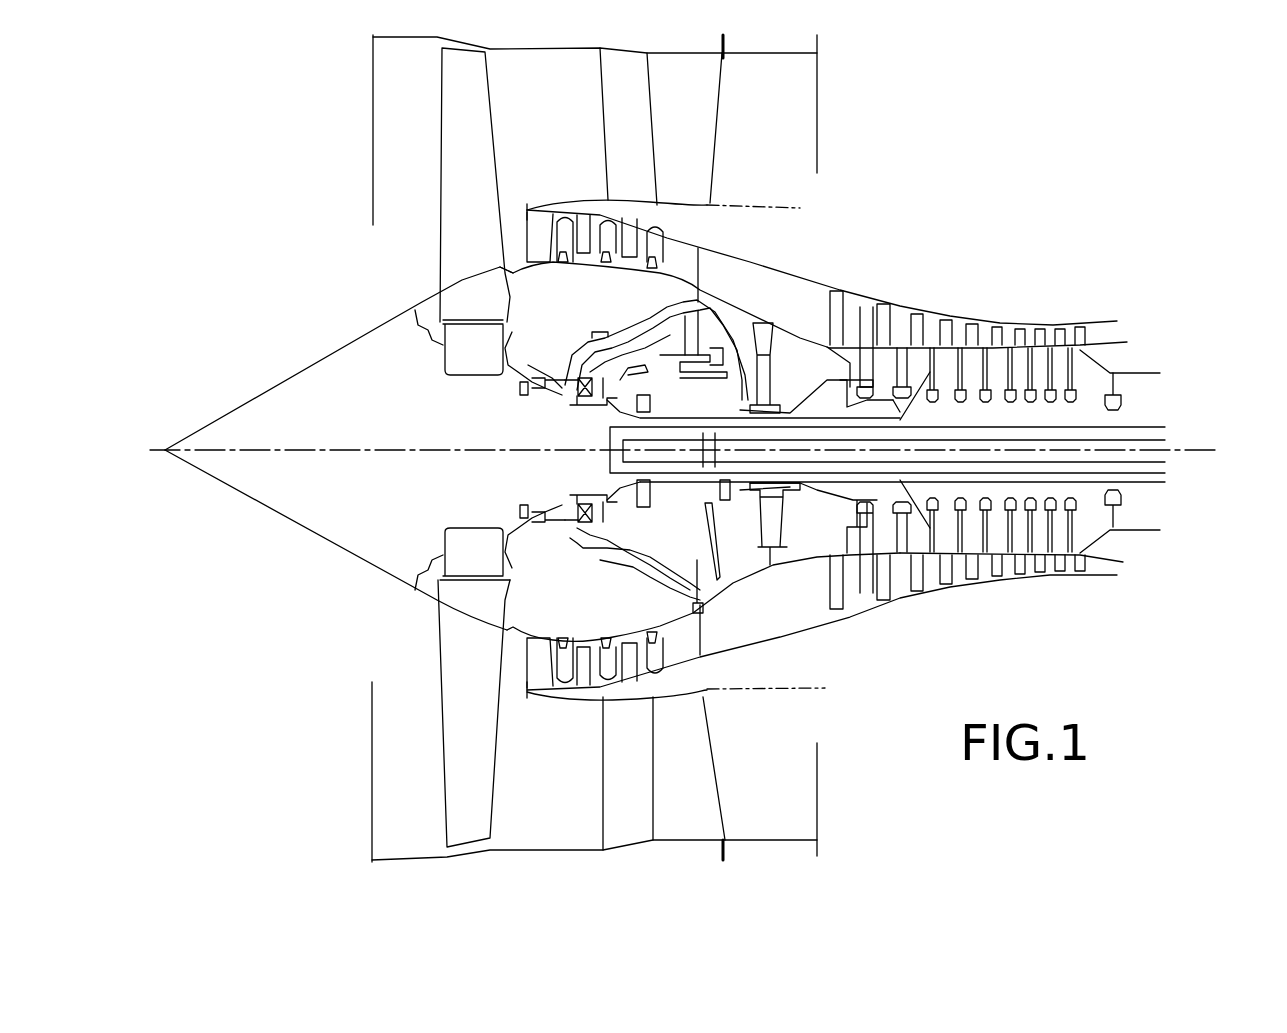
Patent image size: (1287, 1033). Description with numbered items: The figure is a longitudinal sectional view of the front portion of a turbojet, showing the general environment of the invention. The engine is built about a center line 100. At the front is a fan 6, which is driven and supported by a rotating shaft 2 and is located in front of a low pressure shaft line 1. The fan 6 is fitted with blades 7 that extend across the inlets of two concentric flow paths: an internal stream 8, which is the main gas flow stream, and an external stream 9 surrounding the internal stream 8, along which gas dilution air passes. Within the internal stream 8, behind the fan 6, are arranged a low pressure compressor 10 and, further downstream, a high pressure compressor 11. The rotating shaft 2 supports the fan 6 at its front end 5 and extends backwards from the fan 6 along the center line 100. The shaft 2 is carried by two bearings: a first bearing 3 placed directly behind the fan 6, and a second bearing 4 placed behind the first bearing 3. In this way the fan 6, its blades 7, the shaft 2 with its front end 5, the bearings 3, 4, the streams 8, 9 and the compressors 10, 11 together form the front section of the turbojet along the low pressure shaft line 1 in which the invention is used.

The low pressure shaft line 1 is at (794, 381).
The rotating shaft 2 is at (596, 409).
The first bearing 3 is at (566, 396).
The second bearing 4 is at (745, 408).
The front end 5 is at (522, 393).
The fan 6 is at (425, 344).
The blades 7 is at (462, 192).
The internal stream 8 is at (521, 233).
The external stream 9 is at (518, 113).
The low pressure compressor 10 is at (669, 251).
The high pressure compressor 11 is at (995, 323).
The center line 100 is at (1193, 450).